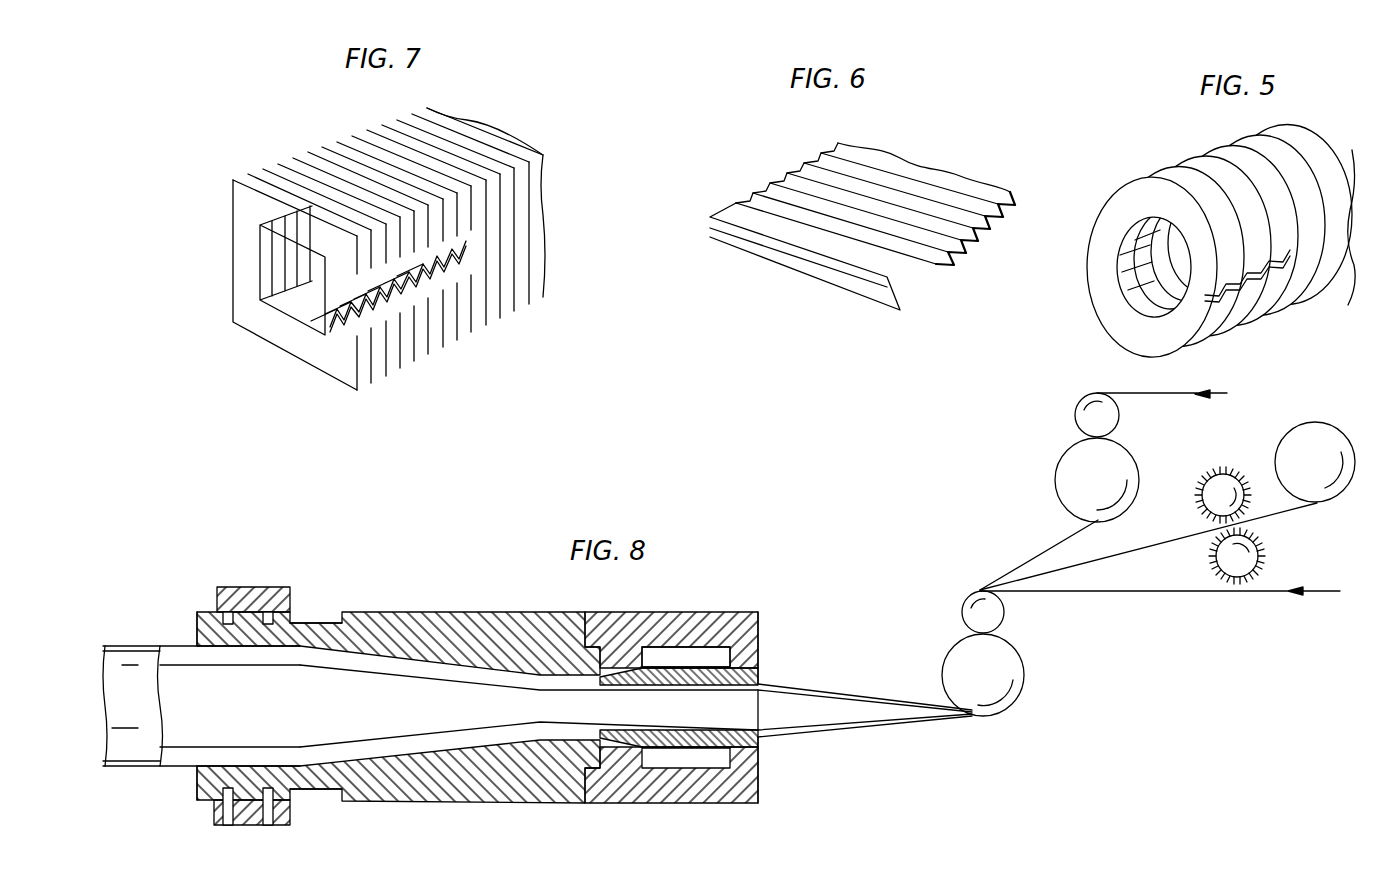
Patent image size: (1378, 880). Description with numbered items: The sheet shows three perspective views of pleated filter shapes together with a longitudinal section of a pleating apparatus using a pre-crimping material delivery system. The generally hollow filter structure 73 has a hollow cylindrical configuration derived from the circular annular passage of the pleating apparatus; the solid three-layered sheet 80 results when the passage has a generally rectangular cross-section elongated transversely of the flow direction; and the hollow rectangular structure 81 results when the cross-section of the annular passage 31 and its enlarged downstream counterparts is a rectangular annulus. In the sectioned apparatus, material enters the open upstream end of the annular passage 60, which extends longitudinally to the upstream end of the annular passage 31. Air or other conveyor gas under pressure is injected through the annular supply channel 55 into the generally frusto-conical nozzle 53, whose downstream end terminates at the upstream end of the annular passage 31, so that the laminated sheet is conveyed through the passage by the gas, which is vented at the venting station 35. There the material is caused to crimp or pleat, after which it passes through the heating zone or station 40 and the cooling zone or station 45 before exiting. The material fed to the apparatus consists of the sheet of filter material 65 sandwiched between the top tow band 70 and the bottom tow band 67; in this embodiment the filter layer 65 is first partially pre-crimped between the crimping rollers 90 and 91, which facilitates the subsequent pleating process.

In FIG. 8, the annular passage 31 is at (443, 663).
In FIG. 8, the venting station 35 is at (330, 598).
In FIG. 8, the heating zone or station 40 is at (275, 582).
In FIG. 8, the cooling zone or station 45 is at (232, 562).
In FIG. 8, the frusto-conical nozzle 53 is at (610, 676).
In FIG. 8, the annular supply channel 55 is at (707, 654).
In FIG. 8, the annular passage 60 is at (752, 741).
In FIG. 8, the sheet of filter material 65 is at (1143, 548).
In FIG. 8, the bottom tow band 67 is at (1093, 591).
In FIG. 8, the top tow band 70 is at (1047, 552).
In FIG. 5, the hollow filter structure 73 is at (1195, 162).
In FIG. 8, the hollow filter structure 73 is at (127, 668).
In FIG. 6, the solid three-layered sheet 80 is at (925, 178).
In FIG. 7, the hollow rectangular structure 81 is at (540, 297).
In FIG. 8, the crimping roller 90 is at (1227, 478).
In FIG. 8, the crimping roller 91 is at (1262, 557).